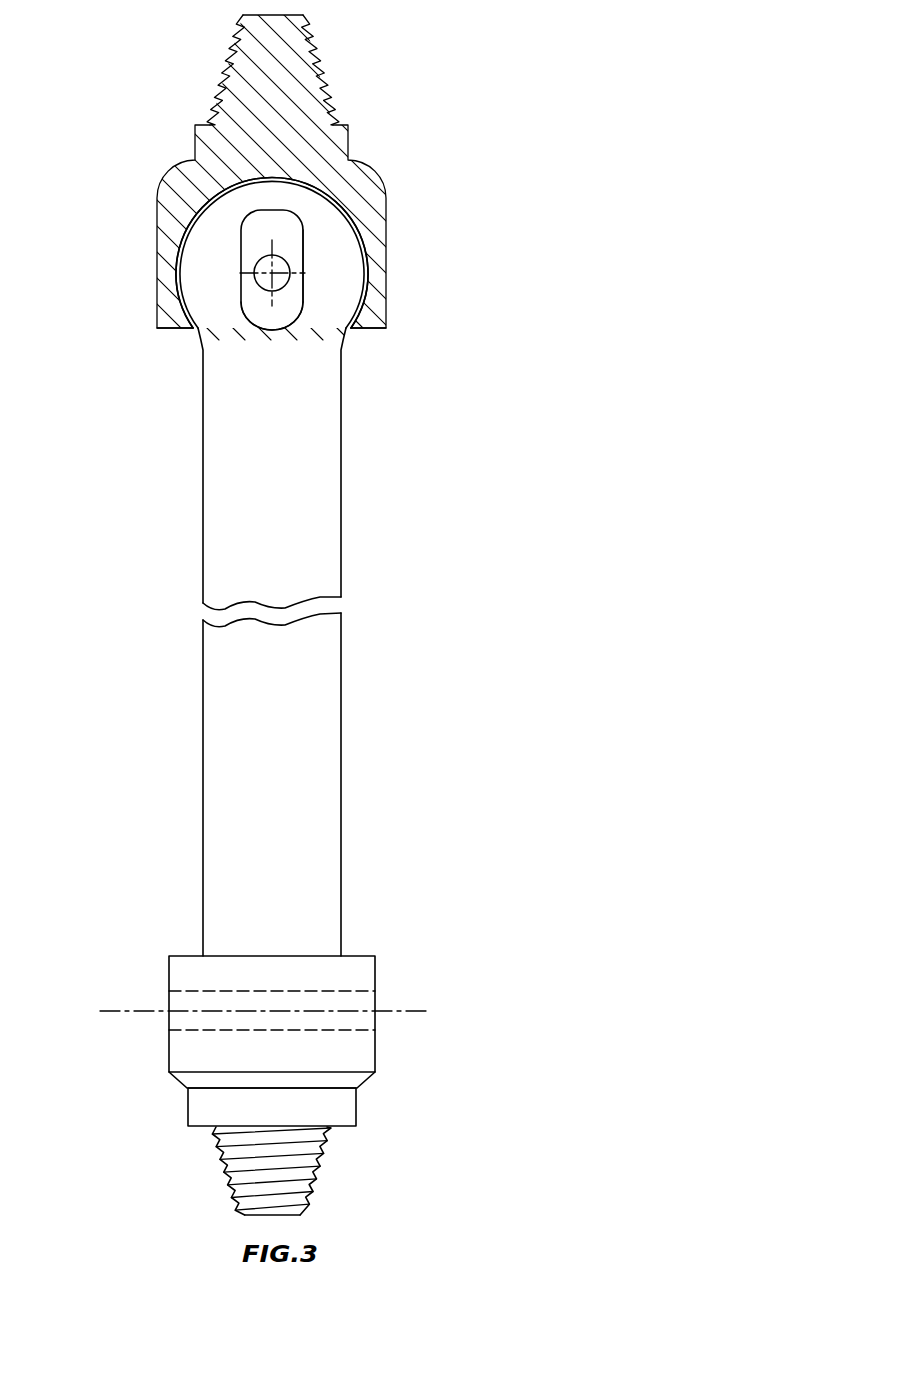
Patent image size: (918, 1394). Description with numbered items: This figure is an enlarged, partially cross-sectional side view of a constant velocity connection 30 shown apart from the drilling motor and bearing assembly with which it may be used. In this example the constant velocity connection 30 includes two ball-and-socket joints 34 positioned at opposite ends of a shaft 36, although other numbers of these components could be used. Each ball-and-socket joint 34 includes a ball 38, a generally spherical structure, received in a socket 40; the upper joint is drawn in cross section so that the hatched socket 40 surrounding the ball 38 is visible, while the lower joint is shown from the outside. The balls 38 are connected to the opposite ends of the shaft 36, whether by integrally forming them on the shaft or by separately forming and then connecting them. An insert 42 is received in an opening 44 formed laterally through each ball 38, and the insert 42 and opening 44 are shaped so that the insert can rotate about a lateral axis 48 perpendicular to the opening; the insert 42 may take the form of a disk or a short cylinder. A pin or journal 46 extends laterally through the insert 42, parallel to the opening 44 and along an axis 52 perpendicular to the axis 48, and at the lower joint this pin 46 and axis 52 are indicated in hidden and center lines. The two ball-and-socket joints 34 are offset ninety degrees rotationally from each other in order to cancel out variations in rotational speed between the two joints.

The constant velocity connection 30 is at (548, 147).
The ball-and-socket joint 34 is at (157, 288).
The shaft 36 is at (343, 722).
The ball 38 is at (362, 238).
The socket 40 is at (366, 260).
The insert 42 is at (241, 246).
The opening 44 is at (300, 313).
The pin or journal 46 is at (270, 277).
The lateral axis 48 is at (303, 283).
The axis 52 is at (274, 271).